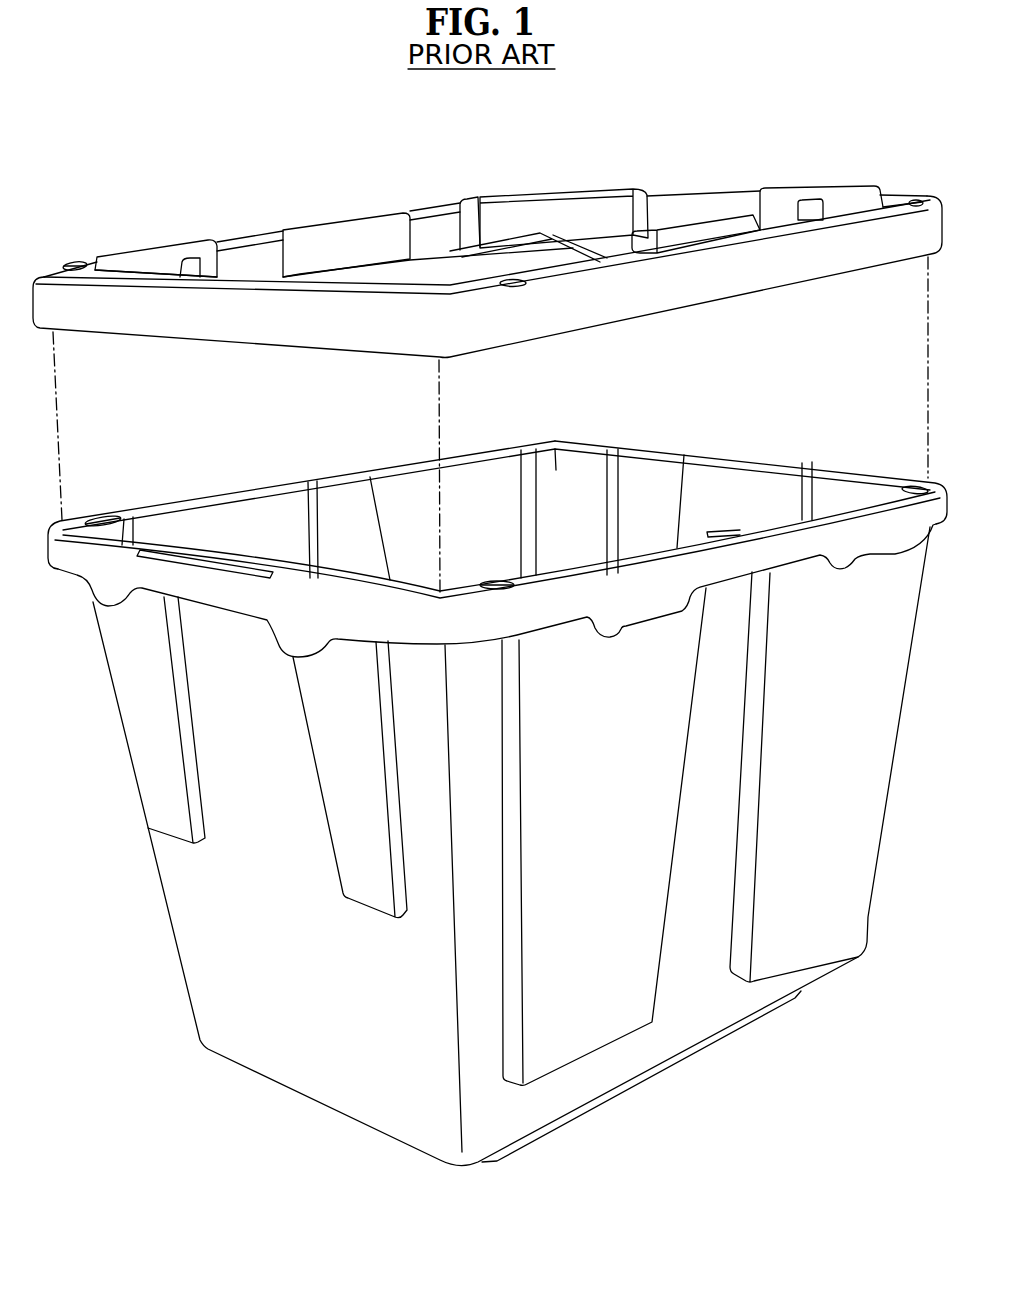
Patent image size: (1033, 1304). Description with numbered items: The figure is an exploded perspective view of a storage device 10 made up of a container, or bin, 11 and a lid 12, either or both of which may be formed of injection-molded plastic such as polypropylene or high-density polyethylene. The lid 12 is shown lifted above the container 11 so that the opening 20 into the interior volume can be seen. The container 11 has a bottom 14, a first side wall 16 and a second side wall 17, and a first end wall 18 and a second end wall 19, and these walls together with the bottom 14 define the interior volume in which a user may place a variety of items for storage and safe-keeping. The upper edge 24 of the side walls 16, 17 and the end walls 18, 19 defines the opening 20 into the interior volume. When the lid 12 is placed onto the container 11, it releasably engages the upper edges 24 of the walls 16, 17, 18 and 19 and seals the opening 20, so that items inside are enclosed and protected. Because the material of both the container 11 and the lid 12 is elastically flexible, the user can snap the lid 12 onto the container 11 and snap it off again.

The storage device 10 is at (118, 125).
The container 11 is at (150, 1001).
The lid 12 is at (54, 225).
The bottom 14 is at (622, 1093).
The first side wall 16 is at (213, 513).
The second side wall 17 is at (695, 1003).
The first end wall 18 is at (333, 1078).
The second end wall 19 is at (858, 490).
The opening 20 is at (405, 444).
The upper edge 24 is at (137, 540).